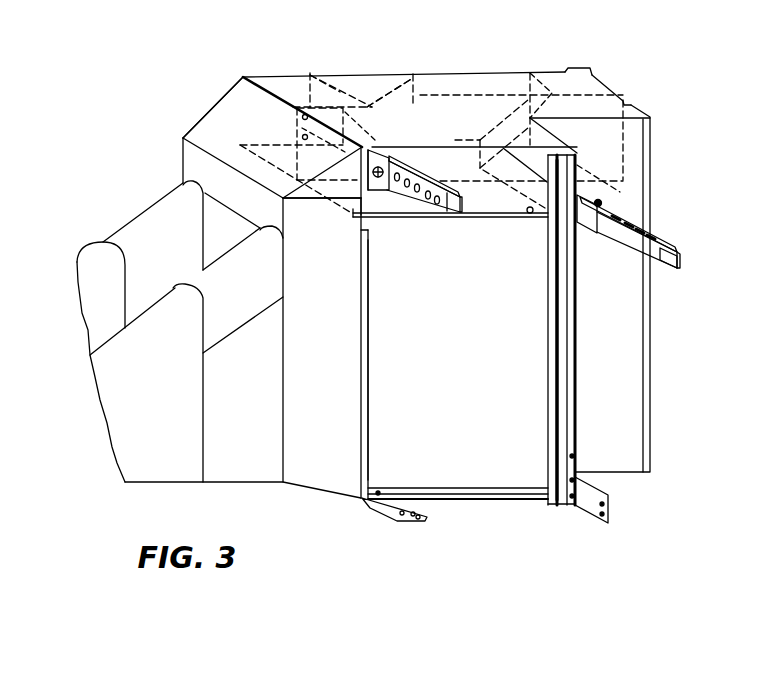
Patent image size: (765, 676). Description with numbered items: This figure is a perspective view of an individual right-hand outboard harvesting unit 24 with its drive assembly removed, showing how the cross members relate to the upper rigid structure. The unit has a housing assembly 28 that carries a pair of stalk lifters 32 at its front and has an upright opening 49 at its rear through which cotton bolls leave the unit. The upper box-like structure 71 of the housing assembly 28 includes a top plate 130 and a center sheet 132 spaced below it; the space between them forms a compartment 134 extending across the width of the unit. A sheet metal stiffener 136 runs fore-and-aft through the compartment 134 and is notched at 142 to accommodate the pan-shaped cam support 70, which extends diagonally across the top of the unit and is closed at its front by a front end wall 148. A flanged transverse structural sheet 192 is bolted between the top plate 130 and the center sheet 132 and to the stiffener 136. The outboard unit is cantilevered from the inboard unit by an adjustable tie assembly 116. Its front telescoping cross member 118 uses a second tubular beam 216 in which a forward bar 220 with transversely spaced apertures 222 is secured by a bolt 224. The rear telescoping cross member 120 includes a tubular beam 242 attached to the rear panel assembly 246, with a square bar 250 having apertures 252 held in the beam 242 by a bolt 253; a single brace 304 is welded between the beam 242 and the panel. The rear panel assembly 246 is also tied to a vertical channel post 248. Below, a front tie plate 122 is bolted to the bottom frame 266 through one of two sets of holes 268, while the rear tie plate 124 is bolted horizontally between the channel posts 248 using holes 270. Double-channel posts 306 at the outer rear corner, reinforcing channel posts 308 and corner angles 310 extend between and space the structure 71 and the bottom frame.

The outboard harvesting unit 24 is at (124, 170).
The housing assembly 28 is at (222, 101).
The upper box-like structure 71 is at (240, 58).
The stalk lifters 32 is at (122, 346).
The bolt 224 is at (342, 192).
The top plate 130 is at (337, 70).
The flanged transverse structural sheet 192 is at (322, 88).
The front end wall 148 is at (293, 130).
The notch 142 is at (362, 85).
The cam support 70 is at (404, 100).
The compartment 134 is at (562, 66).
The double-channel posts 306 is at (578, 70).
The sheet metal stiffener 136 is at (597, 97).
The reinforcing channel posts 308 is at (634, 106).
The corner angles 310 is at (648, 127).
The rear panel assembly 246 is at (613, 153).
The adjustable tie assembly 116 is at (545, 570).
The front telescoping cross member 118 is at (392, 206).
The rear telescoping cross member 120 is at (627, 290).
The vertical channel post 248 is at (552, 388).
The upright opening 49 is at (536, 315).
The second tubular beam 216 is at (393, 143).
The forward bar 220 is at (459, 197).
The apertures 222 is at (426, 201).
The center sheet 132 is at (532, 215).
The brace 304 is at (598, 198).
The bolt 253 is at (600, 198).
The tubular beam 242 is at (592, 226).
The apertures 252 is at (652, 234).
The square bar 250 is at (680, 260).
The bottom frame 266 is at (520, 493).
The front tie plate 122 is at (390, 512).
The holes 268 is at (373, 490).
The rear tie plate 124 is at (595, 512).
The holes 270 is at (573, 480).